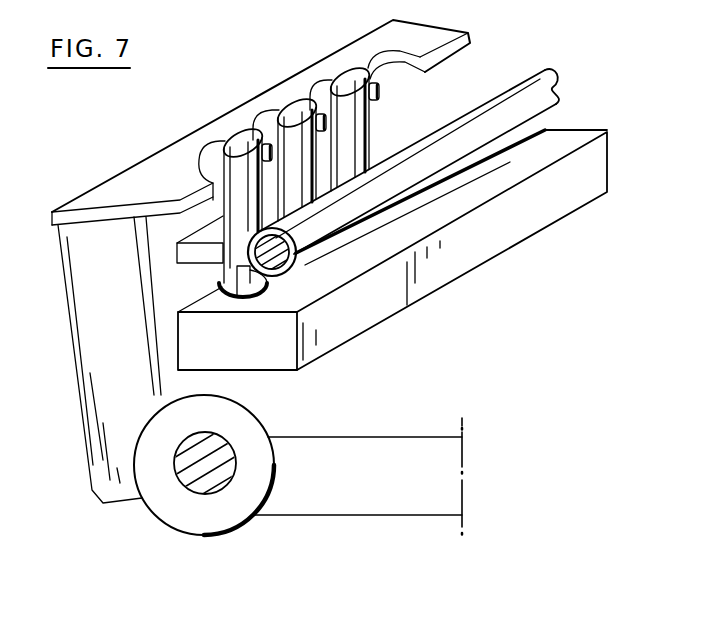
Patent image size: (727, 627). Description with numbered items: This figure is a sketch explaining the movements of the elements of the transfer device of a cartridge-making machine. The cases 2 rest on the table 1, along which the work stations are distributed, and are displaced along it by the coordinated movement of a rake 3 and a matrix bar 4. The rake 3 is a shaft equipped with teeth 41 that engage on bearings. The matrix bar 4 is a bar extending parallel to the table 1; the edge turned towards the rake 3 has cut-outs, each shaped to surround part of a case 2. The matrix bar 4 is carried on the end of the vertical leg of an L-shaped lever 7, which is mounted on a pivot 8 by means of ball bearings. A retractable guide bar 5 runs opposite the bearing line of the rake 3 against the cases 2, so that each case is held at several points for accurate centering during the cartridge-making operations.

The table 1 is at (540, 222).
The case 2 is at (240, 142).
The rake 3 is at (545, 82).
The matrix bar 4 is at (90, 198).
The retractable guide bar 5 is at (182, 253).
The L-shaped lever 7 is at (85, 335).
The pivot 8 is at (193, 483).
The teeth 41 is at (231, 267).